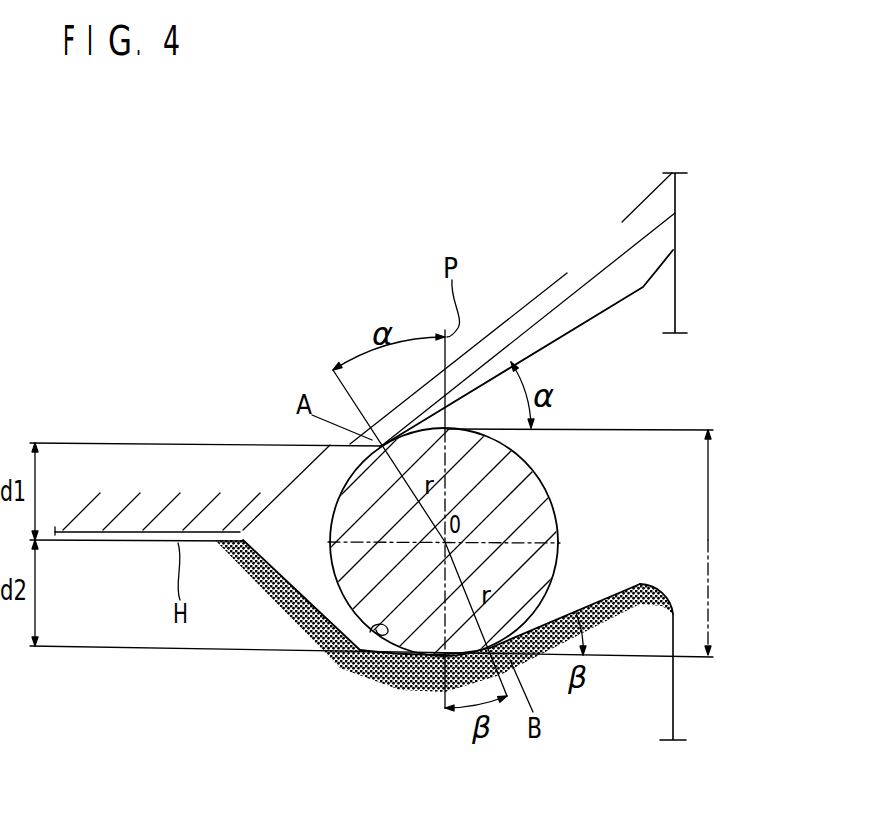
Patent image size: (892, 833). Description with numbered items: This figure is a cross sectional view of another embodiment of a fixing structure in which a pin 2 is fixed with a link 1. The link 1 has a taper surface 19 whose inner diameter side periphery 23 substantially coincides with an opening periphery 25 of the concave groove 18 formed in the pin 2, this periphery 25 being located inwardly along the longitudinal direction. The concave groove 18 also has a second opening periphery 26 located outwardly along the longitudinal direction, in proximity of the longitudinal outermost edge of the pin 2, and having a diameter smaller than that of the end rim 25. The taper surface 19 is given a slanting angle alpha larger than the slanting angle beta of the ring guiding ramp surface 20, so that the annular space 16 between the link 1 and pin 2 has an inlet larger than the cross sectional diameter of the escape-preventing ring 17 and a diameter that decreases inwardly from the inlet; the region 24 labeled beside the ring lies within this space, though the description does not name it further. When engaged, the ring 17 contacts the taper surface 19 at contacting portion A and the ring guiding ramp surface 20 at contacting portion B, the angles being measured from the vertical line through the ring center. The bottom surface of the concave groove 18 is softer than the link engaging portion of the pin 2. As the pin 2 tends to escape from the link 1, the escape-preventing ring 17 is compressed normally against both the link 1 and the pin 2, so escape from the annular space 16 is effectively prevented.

The link 1 is at (677, 228).
The pin 2 is at (677, 717).
The annular space 16 is at (658, 365).
The escape-preventing ring 17 is at (551, 483).
The concave groove 18 is at (385, 652).
The taper surface 19 is at (292, 506).
The ring guiding ramp surface 20 is at (598, 600).
The inner diameter side periphery 23 is at (228, 548).
The groove 24 is at (635, 510).
The opening periphery 25 is at (243, 507).
The opening periphery 26 is at (668, 597).